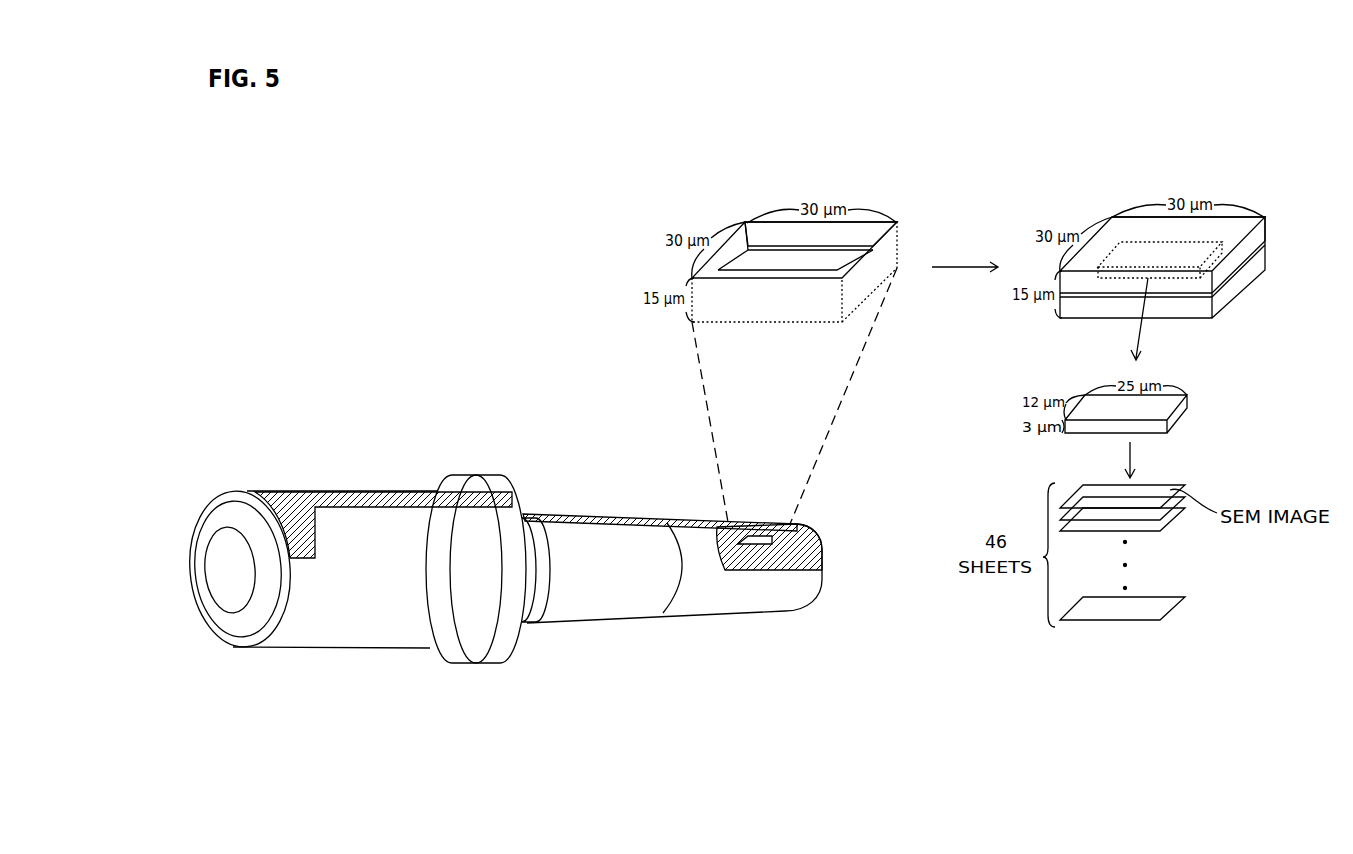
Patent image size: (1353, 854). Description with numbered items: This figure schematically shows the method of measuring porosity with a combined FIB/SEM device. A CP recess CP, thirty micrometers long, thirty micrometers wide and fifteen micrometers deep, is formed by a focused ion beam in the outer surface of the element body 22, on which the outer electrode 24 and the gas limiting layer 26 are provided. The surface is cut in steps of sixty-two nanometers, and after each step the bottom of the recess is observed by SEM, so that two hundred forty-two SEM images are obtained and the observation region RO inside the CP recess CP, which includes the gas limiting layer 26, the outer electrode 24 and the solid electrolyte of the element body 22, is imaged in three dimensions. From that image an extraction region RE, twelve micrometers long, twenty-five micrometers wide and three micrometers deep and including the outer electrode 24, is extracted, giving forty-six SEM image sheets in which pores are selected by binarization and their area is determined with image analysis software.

The element body 22 is at (605, 610).
The outer electrode 24 is at (768, 557).
The gas limiting layer 26 is at (832, 237).
The CP recess CP is at (813, 538).
The observation region RO is at (1242, 244).
The extraction region RE is at (1217, 265).